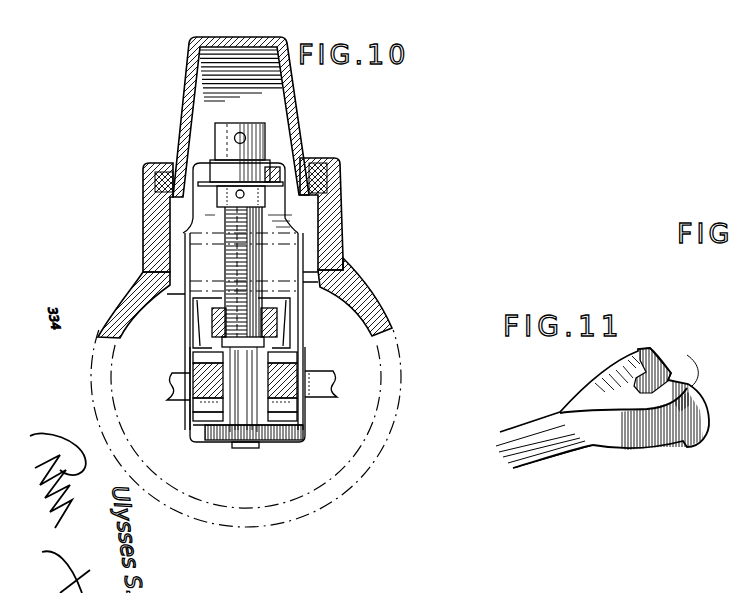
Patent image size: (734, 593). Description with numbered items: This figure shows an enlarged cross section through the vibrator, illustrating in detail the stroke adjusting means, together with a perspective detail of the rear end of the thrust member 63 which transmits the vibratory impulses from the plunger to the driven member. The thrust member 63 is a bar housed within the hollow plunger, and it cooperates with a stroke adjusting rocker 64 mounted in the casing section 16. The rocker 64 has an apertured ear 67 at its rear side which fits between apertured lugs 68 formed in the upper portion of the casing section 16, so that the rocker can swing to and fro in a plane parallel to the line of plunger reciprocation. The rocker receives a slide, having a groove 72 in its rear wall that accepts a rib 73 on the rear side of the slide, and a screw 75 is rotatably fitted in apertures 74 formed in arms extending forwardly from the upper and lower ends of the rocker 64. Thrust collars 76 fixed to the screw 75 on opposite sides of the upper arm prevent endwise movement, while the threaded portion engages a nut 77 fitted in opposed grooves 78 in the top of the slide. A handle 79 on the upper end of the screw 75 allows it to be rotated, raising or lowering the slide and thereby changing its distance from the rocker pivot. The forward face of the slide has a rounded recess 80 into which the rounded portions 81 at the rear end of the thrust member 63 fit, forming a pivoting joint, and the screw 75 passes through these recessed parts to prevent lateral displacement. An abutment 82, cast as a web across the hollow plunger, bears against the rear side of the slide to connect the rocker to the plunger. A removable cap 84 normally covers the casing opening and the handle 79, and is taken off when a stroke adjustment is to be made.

In FIG. 10, the casing section 16 is at (357, 294).
In FIG. 10, the thrust member 63 is at (307, 363).
In FIG. 11, the thrust member 63 is at (553, 458).
In FIG. 10, the stroke adjusting rocker 64 is at (185, 308).
In FIG. 10, the apertured ear 67 is at (272, 231).
In FIG. 10, the apertured lugs 68 is at (175, 241).
In FIG. 10, the groove 72 is at (235, 230).
In FIG. 10, the rib 73 is at (237, 432).
In FIG. 10, the apertures 74 is at (225, 173).
In FIG. 10, the screw 75 is at (215, 250).
In FIG. 10, the thrust collars 76 is at (278, 171).
In FIG. 10, the nut 77 is at (277, 323).
In FIG. 10, the opposed grooves 78 is at (210, 316).
In FIG. 10, the handle 79 is at (266, 147).
In FIG. 10, the rounded recess 80 is at (300, 346).
In FIG. 10, the rounded portions 81 is at (190, 400).
In FIG. 11, the rounded portions 81 is at (658, 372).
In FIG. 10, the abutment 82 is at (327, 380).
In FIG. 10, the cap 84 is at (208, 105).